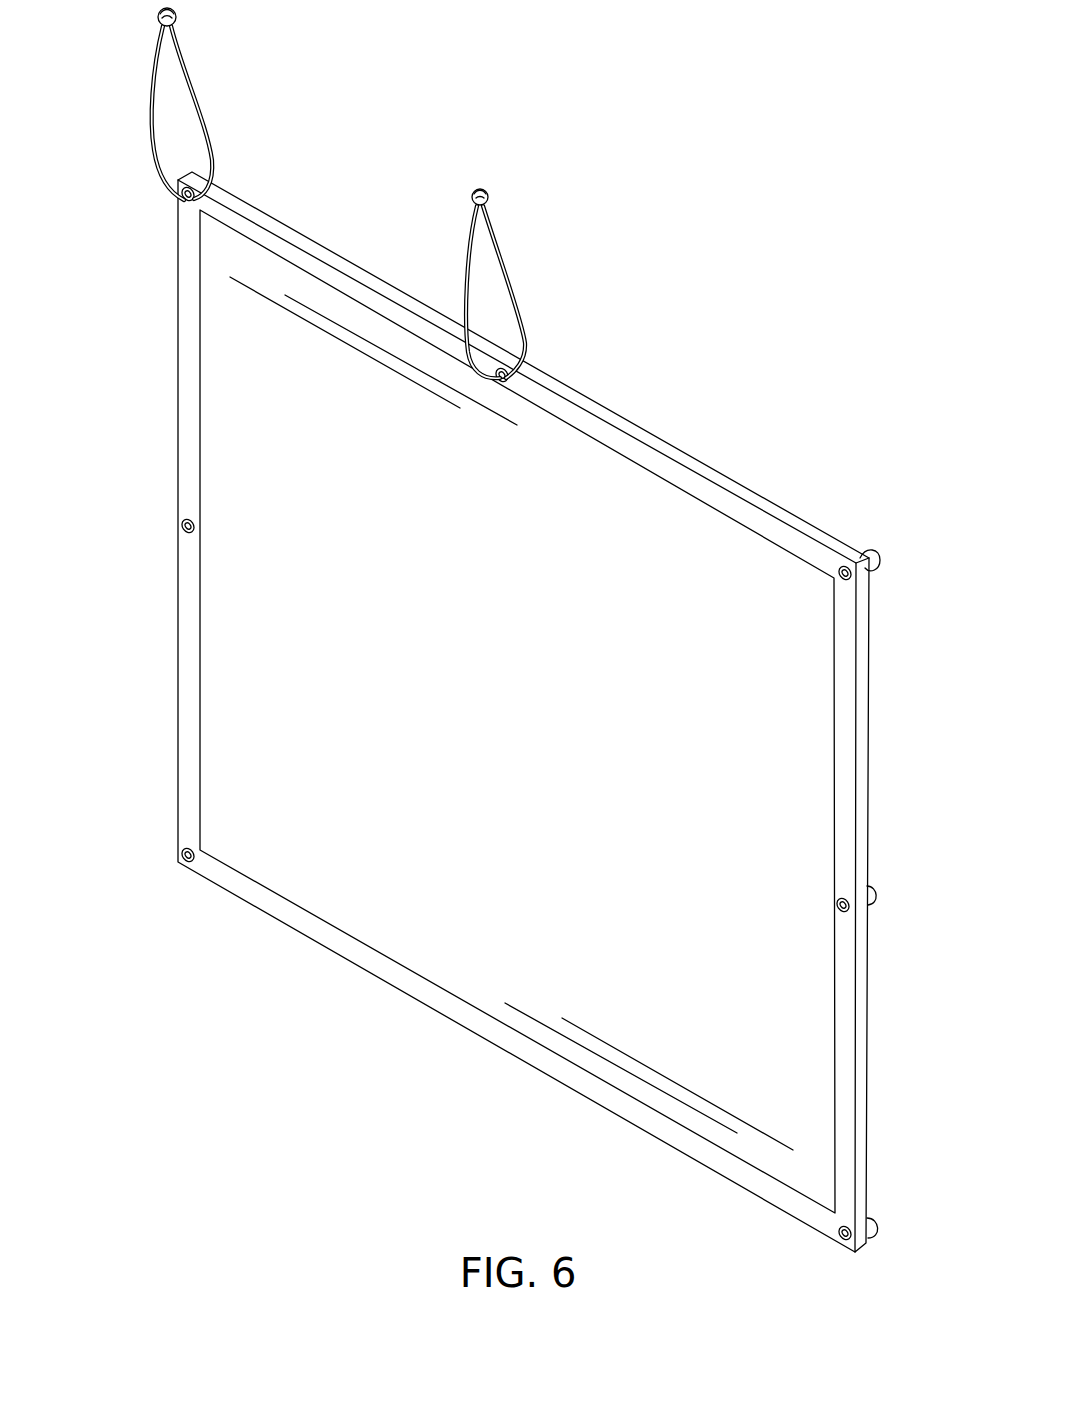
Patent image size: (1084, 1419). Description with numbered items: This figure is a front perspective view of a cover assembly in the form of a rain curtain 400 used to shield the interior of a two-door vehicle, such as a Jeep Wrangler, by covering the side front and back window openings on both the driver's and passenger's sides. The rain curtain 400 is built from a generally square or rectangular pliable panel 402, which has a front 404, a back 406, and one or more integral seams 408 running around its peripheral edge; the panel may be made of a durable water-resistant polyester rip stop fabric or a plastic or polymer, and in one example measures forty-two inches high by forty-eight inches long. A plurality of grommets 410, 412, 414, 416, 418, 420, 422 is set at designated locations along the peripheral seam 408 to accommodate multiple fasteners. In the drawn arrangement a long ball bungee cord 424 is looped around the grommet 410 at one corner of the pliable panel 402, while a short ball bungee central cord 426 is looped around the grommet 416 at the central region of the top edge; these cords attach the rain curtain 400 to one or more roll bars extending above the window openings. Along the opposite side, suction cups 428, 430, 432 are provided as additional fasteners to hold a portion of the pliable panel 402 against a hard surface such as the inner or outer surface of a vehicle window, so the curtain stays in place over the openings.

The rain curtain 400 is at (731, 320).
The pliable panel 402 is at (866, 702).
The front 404 is at (807, 847).
The back 406 is at (743, 452).
The integral seam 408 is at (851, 1108).
The grommet 410 is at (183, 203).
The grommet 412 is at (181, 530).
The grommet 414 is at (181, 862).
The grommet 416 is at (512, 376).
The grommet 418 is at (848, 566).
The grommet 420 is at (838, 912).
The grommet 422 is at (836, 1243).
The ball bungee cord 424 is at (156, 79).
The bungee central cord 426 is at (522, 327).
The suction cup 428 is at (875, 552).
The suction cup 430 is at (873, 889).
The suction cup 432 is at (881, 1215).